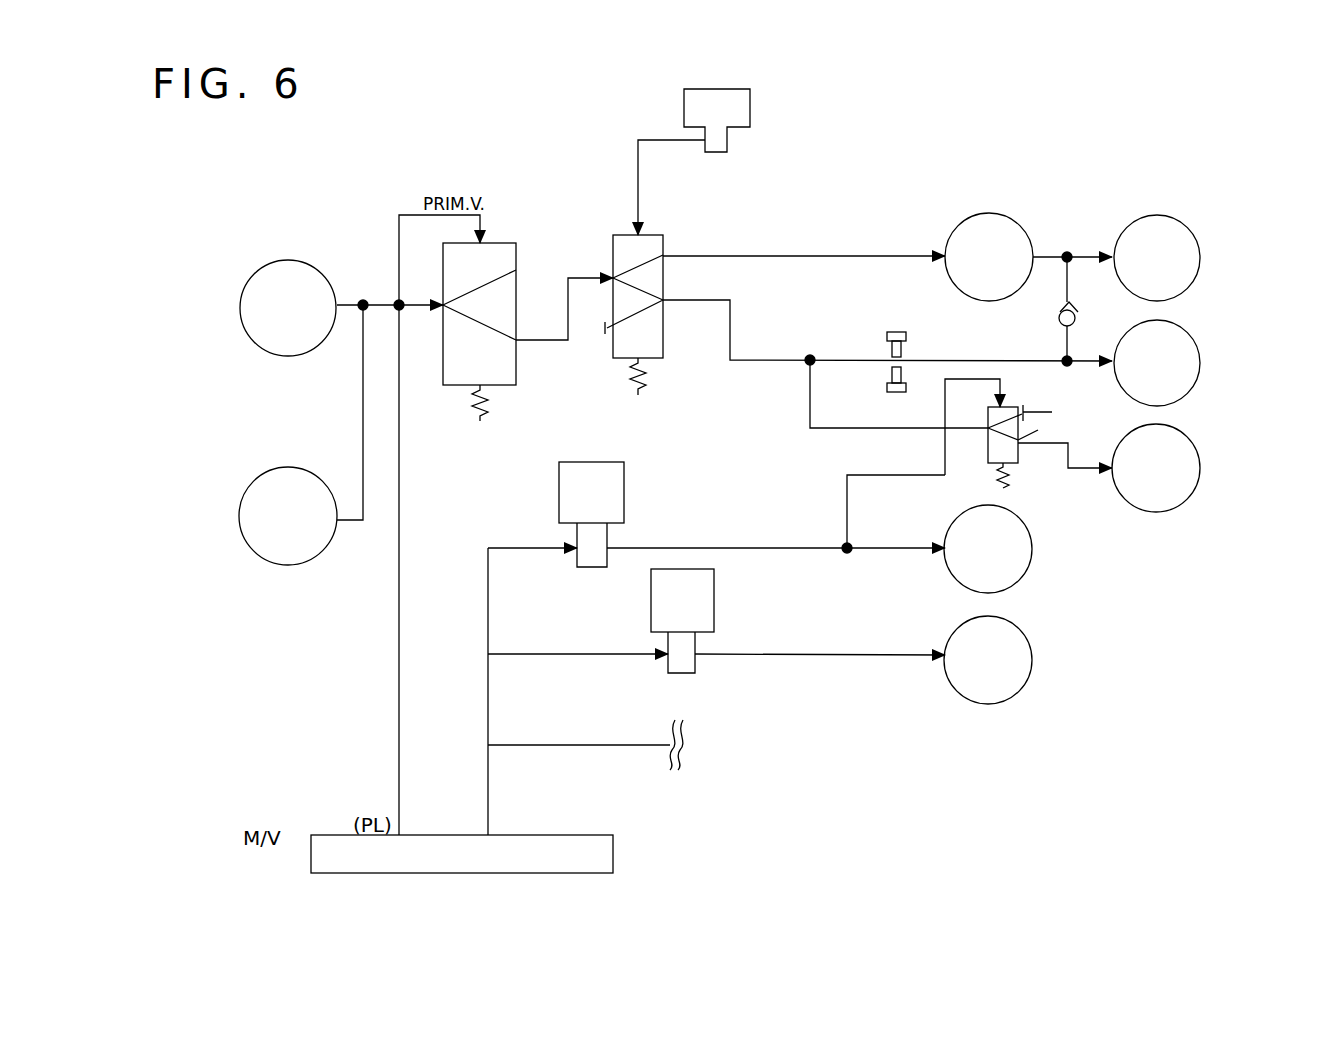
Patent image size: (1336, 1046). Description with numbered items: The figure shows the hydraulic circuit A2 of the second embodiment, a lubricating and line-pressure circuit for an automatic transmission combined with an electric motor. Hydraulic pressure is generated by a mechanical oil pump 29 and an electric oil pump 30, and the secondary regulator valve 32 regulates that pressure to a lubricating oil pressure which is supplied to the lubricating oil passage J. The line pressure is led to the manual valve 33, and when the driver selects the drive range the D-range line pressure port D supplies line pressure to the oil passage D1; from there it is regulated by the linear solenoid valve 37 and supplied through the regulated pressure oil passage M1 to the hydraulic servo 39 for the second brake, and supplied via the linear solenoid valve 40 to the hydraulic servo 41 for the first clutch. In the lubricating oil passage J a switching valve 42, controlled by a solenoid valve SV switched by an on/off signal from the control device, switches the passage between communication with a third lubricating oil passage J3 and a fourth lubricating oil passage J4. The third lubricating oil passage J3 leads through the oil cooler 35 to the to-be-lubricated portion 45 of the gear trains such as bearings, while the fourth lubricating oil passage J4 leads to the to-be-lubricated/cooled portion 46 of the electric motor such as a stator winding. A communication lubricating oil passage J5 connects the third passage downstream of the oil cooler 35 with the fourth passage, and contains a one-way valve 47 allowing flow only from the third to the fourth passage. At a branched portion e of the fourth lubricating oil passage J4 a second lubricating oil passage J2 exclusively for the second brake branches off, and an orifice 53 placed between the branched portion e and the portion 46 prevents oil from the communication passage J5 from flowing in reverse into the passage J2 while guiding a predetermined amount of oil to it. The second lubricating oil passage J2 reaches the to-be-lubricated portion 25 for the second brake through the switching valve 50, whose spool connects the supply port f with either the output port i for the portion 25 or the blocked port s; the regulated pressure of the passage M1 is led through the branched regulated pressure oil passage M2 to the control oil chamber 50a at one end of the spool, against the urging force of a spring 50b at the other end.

The mechanical oil pump 29 is at (281, 260).
The electric oil pump 30 is at (283, 466).
The secondary regulator valve 32 is at (502, 243).
The switching valve 42 is at (653, 235).
The solenoid valve SV is at (750, 102).
The hydraulic circuit A2 is at (818, 178).
The lubricating oil passage J is at (568, 310).
The second lubricating oil passage J2 is at (863, 426).
The third lubricating oil passage J3 is at (702, 255).
The fourth lubricating oil passage J4 is at (762, 360).
The communication lubricating oil passage J5 is at (1072, 282).
The branched portion e is at (813, 357).
The orifice 53 is at (898, 330).
The oil cooler 35 is at (982, 213).
The to-be-lubricated portion of the gear trains 45 is at (1200, 262).
The to-be-lubricated/cooled portion of the electric motor 46 is at (1198, 345).
The one-way valve 47 is at (1058, 318).
The switching valve for B-2 50 is at (1019, 454).
The control oil chamber 50a is at (1008, 407).
The spring 50b is at (992, 467).
The supply port f is at (988, 428).
The blocked port s is at (1046, 412).
The output port i is at (1034, 432).
The to-be-lubricated portion for the brake B-2 25 is at (1200, 460).
The branched regulated pressure oil passage M2 is at (845, 498).
The regulated pressure oil passage M1 is at (725, 548).
The hydraulic servo for the brake B-2 39 is at (1033, 538).
The hydraulic servo for the clutch C-1 41 is at (1033, 650).
The linear solenoid valve (SLB2) 37 is at (625, 482).
The linear solenoid valve (SLC1) 40 is at (715, 588).
The oil passage D1 is at (487, 728).
The D-range line pressure port D is at (486, 835).
The manual valve 33 is at (590, 835).